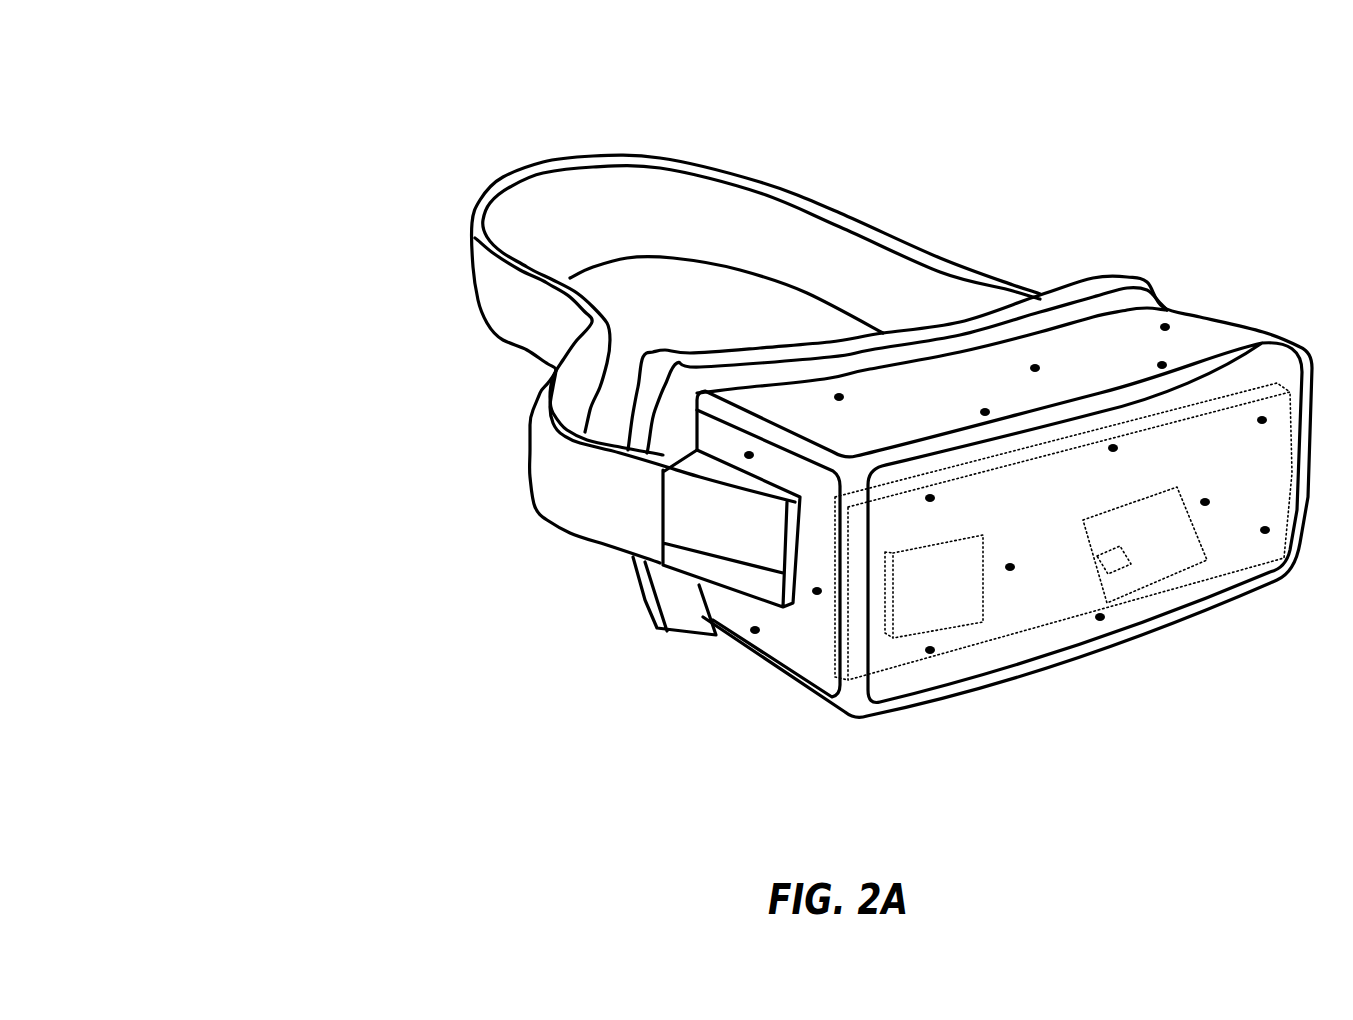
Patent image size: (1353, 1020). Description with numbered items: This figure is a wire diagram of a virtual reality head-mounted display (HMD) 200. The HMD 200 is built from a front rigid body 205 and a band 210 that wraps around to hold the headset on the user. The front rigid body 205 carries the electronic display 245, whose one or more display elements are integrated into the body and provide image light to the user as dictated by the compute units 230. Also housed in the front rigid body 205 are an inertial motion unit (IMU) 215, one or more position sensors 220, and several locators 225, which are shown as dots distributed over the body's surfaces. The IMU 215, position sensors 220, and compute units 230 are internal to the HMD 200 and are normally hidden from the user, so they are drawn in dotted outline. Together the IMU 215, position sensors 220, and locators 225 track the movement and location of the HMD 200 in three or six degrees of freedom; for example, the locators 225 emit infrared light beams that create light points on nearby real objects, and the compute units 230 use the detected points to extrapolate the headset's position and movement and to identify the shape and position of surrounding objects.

The virtual reality head-mounted display (HMD) 200 is at (349, 131).
The front rigid body 205 is at (870, 718).
The band 210 is at (477, 290).
The inertial motion unit (IMU) 215 is at (1083, 535).
The position sensors 220 is at (1110, 563).
The locators 225 is at (978, 413).
The compute units 230 is at (940, 548).
The electronic display 245 is at (1290, 472).